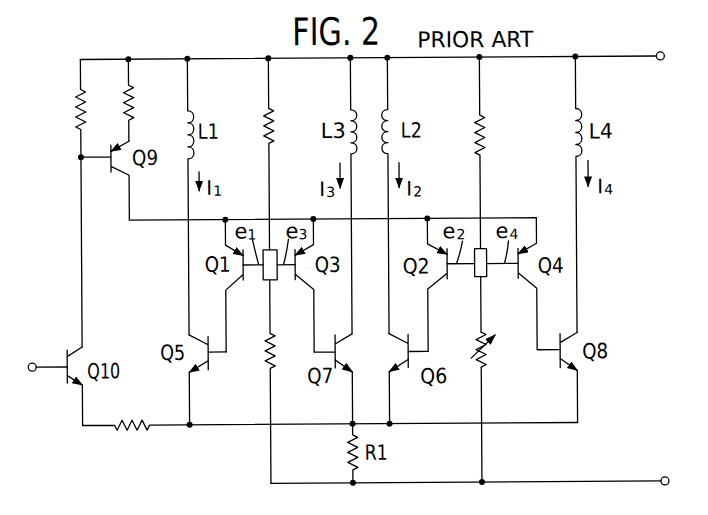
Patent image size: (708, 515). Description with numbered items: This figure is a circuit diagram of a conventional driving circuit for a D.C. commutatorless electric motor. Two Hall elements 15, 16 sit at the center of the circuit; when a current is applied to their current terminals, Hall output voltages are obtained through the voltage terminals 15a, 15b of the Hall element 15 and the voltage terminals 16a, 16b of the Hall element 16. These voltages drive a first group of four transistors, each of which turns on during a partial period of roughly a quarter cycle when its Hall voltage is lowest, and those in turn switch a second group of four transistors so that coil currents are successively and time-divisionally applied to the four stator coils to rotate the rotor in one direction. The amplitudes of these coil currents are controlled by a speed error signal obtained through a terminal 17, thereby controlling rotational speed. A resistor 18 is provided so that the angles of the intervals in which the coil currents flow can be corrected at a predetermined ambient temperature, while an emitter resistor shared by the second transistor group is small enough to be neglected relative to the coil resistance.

The Hall element 15 is at (274, 284).
The voltage terminal 15a is at (260, 273).
The voltage terminal 15b is at (286, 269).
The Hall element 16 is at (475, 282).
The voltage terminal 16a is at (472, 270).
The voltage terminal 16b is at (487, 269).
The terminal 17 is at (30, 363).
The resistor 18 is at (495, 357).